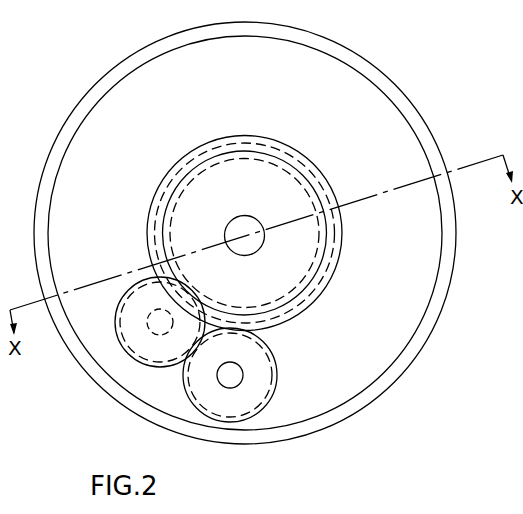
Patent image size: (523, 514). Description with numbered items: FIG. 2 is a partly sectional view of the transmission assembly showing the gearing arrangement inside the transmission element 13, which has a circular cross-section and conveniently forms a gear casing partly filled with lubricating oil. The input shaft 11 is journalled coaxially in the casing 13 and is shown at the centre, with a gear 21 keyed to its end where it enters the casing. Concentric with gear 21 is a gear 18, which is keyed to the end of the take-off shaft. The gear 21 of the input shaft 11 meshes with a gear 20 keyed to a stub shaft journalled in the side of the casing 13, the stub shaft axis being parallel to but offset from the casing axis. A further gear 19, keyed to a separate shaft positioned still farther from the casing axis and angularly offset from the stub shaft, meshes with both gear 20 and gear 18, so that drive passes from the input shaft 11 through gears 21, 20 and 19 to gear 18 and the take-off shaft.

The transmission element 13 is at (425, 143).
The gear 18 is at (332, 248).
The gear 21 is at (302, 253).
The input shaft 11 is at (255, 245).
The gear 20 is at (138, 337).
The gear 19 is at (240, 400).